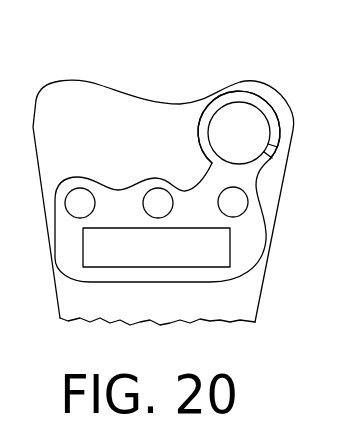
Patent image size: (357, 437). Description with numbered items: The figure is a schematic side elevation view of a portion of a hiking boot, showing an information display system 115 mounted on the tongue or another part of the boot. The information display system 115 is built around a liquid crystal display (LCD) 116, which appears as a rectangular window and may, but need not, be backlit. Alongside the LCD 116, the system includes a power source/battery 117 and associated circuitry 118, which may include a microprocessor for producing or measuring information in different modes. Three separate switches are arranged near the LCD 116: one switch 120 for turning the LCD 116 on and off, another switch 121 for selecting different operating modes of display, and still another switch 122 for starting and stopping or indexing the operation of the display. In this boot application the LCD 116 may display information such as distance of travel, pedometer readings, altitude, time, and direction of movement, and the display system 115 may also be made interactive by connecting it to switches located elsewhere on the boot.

The information display system 115 is at (307, 221).
The liquid crystal display 116 is at (222, 260).
The power source/battery 117 is at (232, 105).
The associated circuitry 118 is at (266, 88).
The switch 120 is at (82, 200).
The switch 121 is at (160, 202).
The switch 122 is at (239, 203).